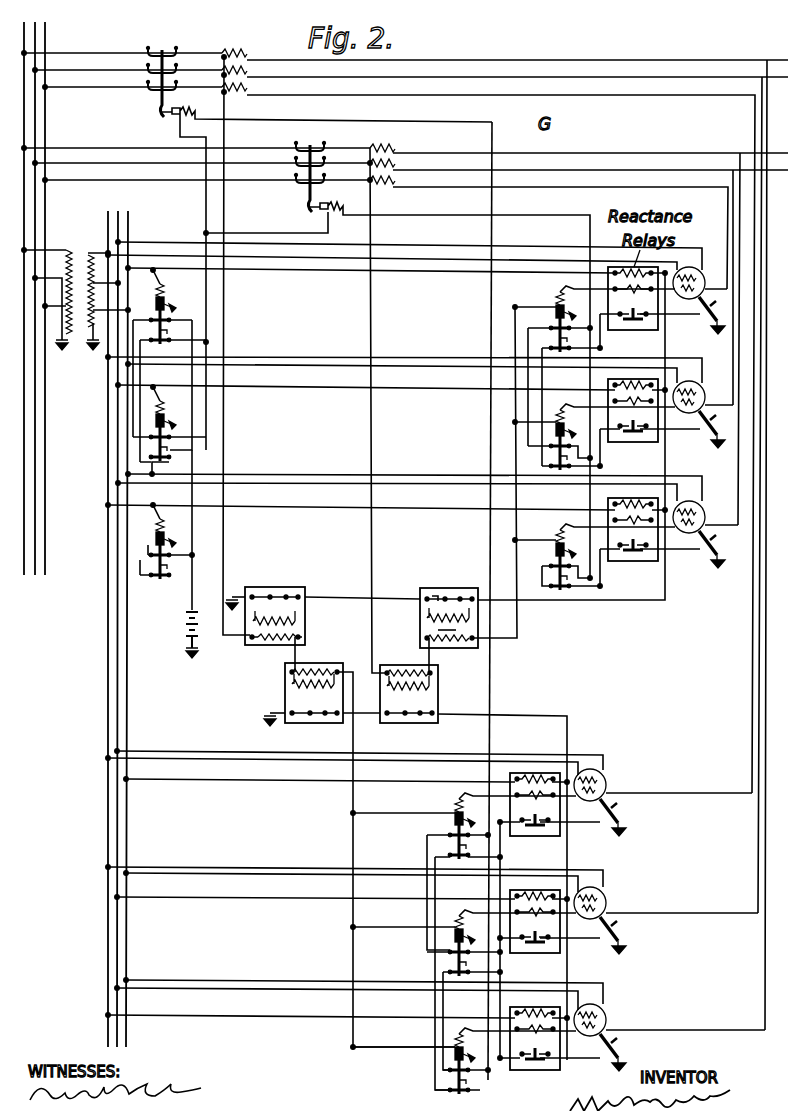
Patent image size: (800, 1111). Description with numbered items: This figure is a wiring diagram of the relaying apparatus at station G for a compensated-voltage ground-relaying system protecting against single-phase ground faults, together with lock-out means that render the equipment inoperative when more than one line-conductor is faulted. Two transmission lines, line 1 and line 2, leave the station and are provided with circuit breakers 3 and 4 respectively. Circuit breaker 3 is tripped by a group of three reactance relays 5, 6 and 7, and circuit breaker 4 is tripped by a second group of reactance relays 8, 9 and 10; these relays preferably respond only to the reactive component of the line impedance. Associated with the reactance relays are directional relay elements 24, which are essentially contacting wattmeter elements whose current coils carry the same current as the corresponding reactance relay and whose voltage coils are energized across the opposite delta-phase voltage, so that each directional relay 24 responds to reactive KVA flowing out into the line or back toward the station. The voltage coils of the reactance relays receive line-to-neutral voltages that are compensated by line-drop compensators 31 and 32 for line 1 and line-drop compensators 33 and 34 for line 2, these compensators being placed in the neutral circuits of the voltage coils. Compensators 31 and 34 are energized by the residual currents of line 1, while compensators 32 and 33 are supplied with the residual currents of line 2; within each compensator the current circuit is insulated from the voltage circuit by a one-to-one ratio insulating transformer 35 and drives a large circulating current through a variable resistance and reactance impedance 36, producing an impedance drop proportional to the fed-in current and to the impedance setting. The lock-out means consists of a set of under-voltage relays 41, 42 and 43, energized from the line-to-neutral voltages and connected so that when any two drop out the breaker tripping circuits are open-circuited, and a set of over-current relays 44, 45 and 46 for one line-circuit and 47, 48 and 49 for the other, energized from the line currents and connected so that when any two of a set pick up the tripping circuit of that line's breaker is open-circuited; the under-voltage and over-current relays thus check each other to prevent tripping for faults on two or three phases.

The line 1 is at (781, 136).
The line 2 is at (782, 98).
The circuit breaker 3 is at (303, 188).
The circuit breaker 4 is at (152, 96).
The reactance relay 5 is at (649, 570).
The reactance relay 6 is at (649, 450).
The reactance relay 7 is at (654, 330).
The reactance relay 8 is at (554, 1072).
The reactance relay 9 is at (554, 953).
The reactance relay 10 is at (558, 838).
The directional relay element 24 is at (604, 1020).
The line-drop compensator 31 is at (456, 590).
The line-drop compensator 32 is at (305, 590).
The line-drop compensator 33 is at (285, 693).
The line-drop compensator 34 is at (438, 695).
The insulating transformer 35 is at (434, 632).
The variable resistance and reactance impedance 36 is at (430, 594).
The under-voltage relay 41 is at (187, 532).
The under-voltage relay 42 is at (187, 412).
The under-voltage relay 43 is at (191, 300).
The over-current relay 44 is at (585, 554).
The over-current relay 45 is at (585, 434).
The over-current relay 46 is at (585, 320).
The over-current relay 47 is at (483, 1064).
The over-current relay 48 is at (483, 945).
The over-current relay 49 is at (483, 828).